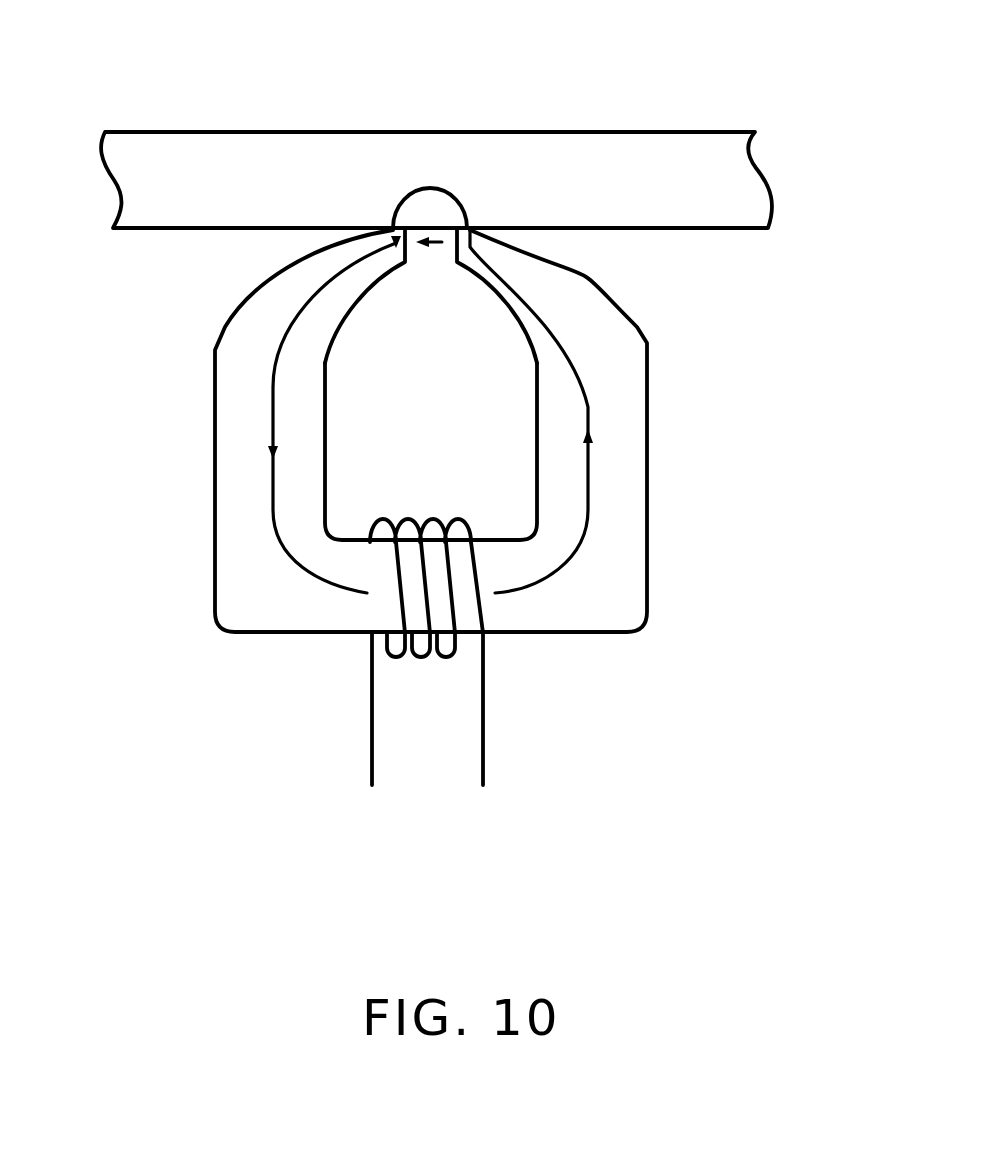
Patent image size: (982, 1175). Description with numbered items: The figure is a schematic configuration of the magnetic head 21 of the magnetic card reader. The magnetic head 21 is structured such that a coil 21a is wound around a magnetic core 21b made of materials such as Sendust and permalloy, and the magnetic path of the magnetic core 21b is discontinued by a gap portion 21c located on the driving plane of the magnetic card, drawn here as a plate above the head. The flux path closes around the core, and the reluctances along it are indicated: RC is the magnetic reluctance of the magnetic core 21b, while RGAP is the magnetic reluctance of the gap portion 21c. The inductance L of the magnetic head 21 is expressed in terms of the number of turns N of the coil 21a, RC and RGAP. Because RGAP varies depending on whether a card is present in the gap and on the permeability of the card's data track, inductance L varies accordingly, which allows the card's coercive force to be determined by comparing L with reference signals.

The magnetic head 21 is at (520, 554).
The coil 21a is at (425, 657).
The magnetic core 21b is at (627, 373).
The gap portion 21c is at (423, 272).
The magnetic reluctant of gap portion RGAP is at (448, 170).
The magnetic reluctant of magnetic core RC is at (720, 497).